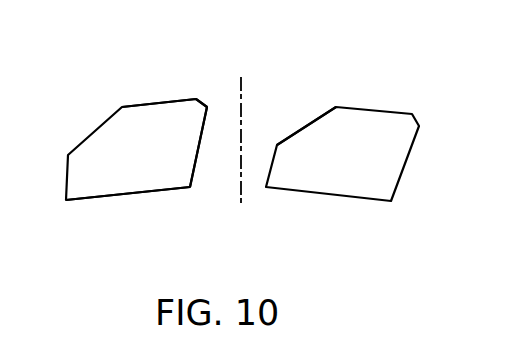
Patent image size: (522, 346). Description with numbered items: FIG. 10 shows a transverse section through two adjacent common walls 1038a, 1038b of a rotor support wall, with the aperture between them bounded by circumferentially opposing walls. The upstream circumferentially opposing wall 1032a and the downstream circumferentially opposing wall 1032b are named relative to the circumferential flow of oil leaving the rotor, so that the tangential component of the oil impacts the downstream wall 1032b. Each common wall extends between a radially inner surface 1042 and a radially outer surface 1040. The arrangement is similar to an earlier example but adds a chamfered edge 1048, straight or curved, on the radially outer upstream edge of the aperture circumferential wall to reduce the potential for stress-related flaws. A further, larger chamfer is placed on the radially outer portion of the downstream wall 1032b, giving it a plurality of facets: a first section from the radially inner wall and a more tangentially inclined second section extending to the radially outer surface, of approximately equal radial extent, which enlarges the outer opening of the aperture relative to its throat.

The common wall 1038a is at (93, 174).
The common wall 1038b is at (383, 168).
The radially inner surface 1042 is at (144, 104).
The chamfered edge 1048 is at (200, 98).
The radially outer surface 1040 is at (113, 197).
The upstream circumferentially opposing wall 1032a is at (193, 175).
The downstream circumferentially opposing wall 1032b is at (308, 120).